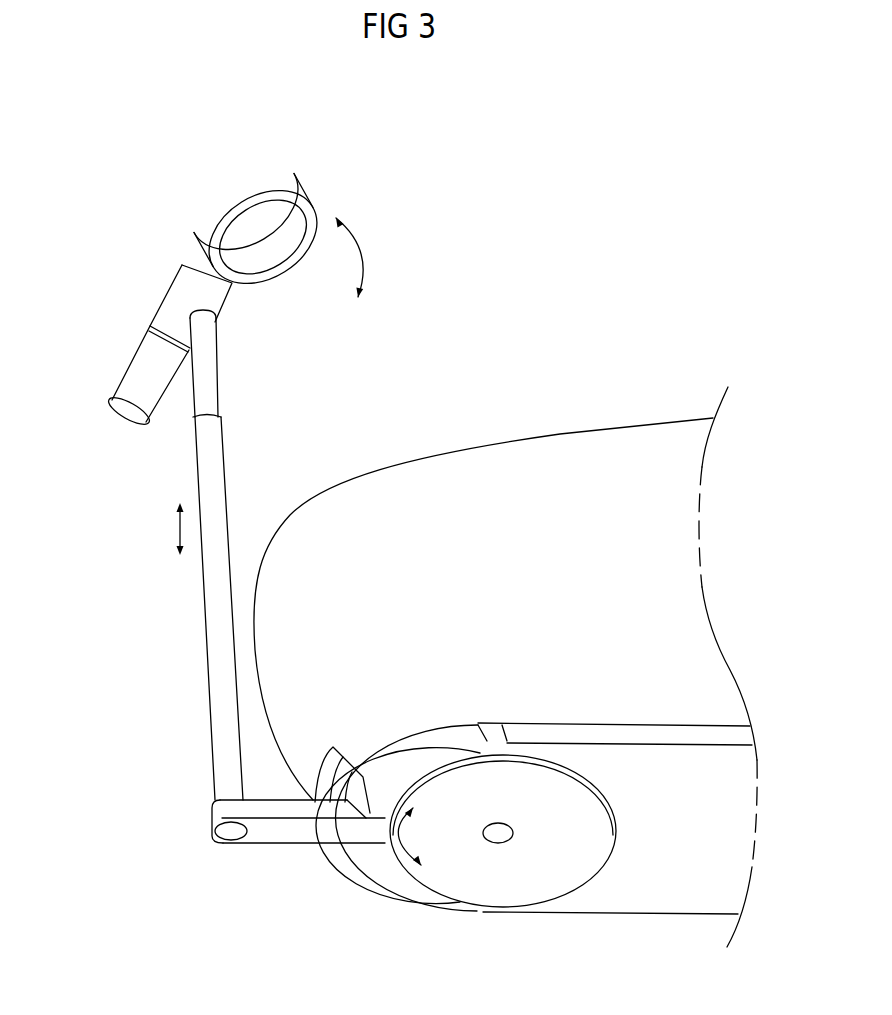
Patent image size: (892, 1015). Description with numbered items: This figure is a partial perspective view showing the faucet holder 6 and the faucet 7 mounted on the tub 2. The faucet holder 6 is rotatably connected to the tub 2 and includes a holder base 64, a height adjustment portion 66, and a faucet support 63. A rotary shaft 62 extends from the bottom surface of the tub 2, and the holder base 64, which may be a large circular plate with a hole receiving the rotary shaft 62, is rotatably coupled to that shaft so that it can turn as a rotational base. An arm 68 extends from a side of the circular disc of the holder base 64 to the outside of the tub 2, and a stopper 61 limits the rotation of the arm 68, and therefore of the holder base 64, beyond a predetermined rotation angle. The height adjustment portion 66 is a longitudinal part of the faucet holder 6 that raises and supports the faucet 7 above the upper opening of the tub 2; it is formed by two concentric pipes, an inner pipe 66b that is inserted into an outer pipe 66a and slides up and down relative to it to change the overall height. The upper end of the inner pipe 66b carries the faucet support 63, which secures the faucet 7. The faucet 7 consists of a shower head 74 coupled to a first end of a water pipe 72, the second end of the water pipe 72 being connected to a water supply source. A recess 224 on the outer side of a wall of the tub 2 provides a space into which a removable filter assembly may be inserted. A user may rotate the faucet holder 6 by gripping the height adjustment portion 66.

The tub 2 is at (546, 428).
The faucet holder 6 is at (252, 559).
The faucet 7 is at (234, 265).
The water pipe 72 is at (153, 366).
The shower head 74 is at (211, 210).
The faucet support 63 is at (204, 301).
The height adjustment portion 66 is at (270, 559).
The outer pipe 66a is at (212, 443).
The inner pipe 66b is at (207, 392).
The recess 224 is at (324, 782).
The arm 68 is at (287, 835).
The holder base 64 is at (425, 870).
The stopper 61 is at (488, 737).
The rotary shaft 62 is at (499, 836).